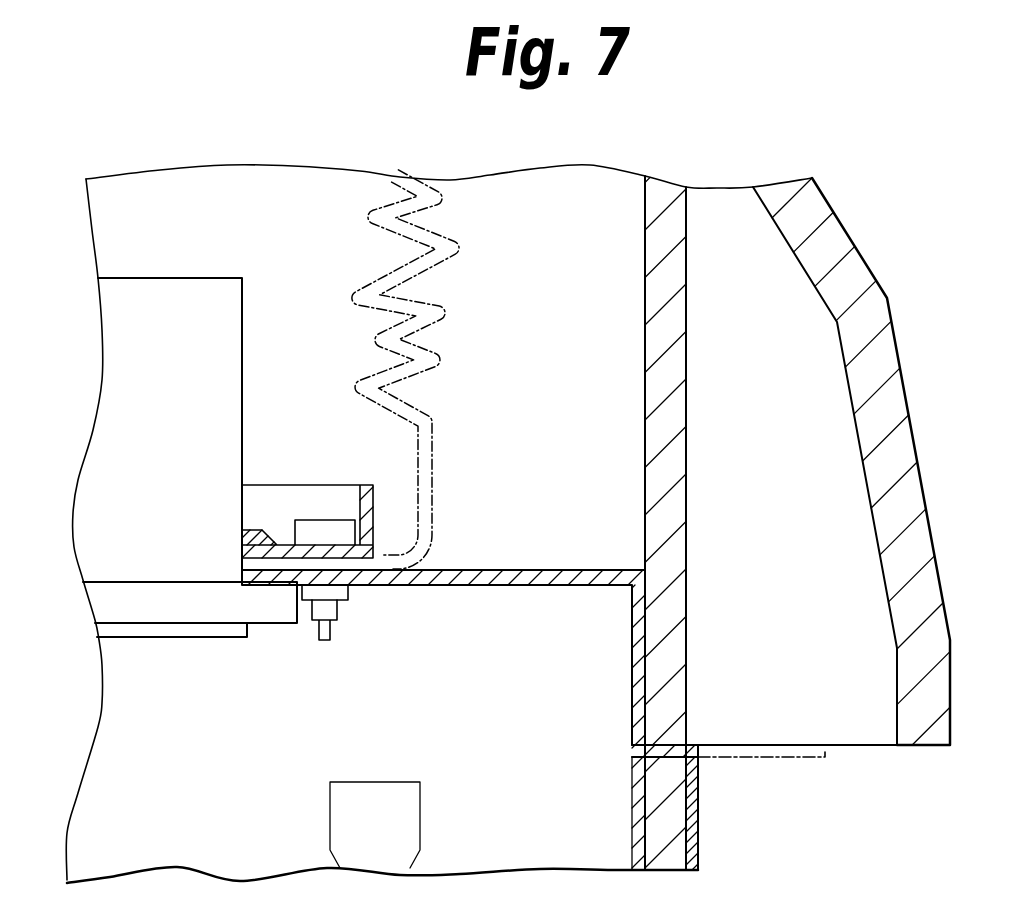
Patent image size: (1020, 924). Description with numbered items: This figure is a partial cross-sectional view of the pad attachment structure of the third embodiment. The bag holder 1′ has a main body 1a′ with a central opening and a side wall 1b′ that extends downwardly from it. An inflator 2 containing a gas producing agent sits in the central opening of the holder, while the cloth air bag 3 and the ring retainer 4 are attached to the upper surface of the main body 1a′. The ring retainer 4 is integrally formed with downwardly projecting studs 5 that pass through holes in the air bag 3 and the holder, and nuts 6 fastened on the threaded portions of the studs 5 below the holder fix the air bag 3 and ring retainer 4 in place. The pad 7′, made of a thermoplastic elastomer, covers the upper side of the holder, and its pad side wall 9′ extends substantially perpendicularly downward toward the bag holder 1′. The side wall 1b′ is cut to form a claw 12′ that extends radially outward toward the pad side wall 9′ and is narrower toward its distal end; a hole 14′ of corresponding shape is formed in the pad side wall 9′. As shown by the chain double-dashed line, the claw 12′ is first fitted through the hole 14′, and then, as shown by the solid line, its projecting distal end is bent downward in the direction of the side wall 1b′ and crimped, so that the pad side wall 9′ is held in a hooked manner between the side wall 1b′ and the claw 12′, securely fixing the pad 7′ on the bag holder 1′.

The inflator 2 is at (176, 278).
The air bag 3 is at (443, 360).
The ring retainer 4 is at (366, 483).
The stud 5 is at (338, 612).
The nut 6 is at (352, 593).
The bag holder 1′ is at (492, 570).
The main body 1a′ is at (578, 570).
The side wall 1b′ is at (630, 662).
The pad 7′ is at (716, 182).
The pad side wall 9′ is at (688, 322).
The claw 12′ is at (788, 745).
The hole 14′ is at (680, 745).